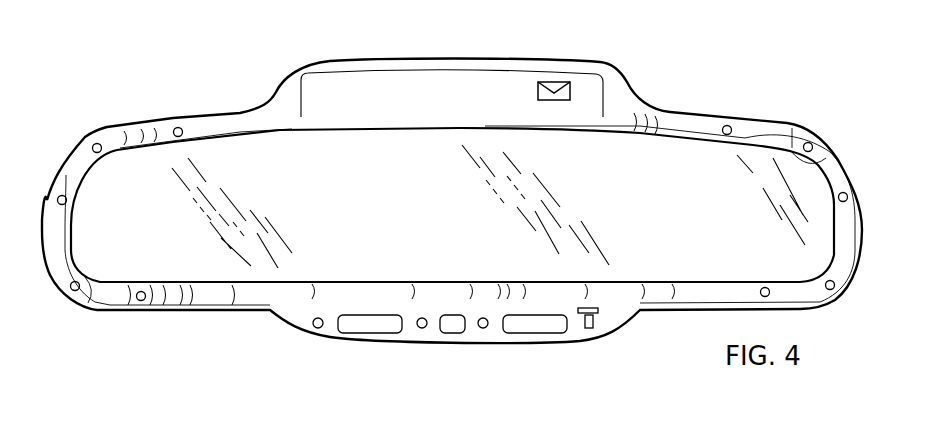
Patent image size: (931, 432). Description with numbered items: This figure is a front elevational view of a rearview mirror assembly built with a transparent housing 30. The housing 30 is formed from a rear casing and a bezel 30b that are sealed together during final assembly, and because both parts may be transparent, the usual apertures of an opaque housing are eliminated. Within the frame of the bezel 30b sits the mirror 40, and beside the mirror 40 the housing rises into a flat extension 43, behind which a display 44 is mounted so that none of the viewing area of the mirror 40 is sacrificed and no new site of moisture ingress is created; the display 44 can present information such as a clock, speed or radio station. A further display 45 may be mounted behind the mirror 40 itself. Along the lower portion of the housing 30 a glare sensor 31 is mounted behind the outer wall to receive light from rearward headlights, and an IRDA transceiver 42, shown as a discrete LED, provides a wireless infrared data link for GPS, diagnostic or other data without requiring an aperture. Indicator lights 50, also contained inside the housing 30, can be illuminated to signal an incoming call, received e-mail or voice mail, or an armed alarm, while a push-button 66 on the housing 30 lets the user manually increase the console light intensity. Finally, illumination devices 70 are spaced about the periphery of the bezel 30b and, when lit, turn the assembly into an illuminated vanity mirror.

The transparent housing 30 is at (112, 138).
The bezel 30b is at (672, 115).
The glare sensor 31 is at (312, 327).
The mirror 40 is at (227, 150).
The IRDA transceiver 42 is at (599, 328).
The flat extension 43 is at (610, 72).
The display 44 is at (315, 85).
The display 45 is at (752, 163).
The indicator lights 50 is at (420, 329).
The push-button 66 is at (375, 334).
The illumination devices 70 is at (95, 144).